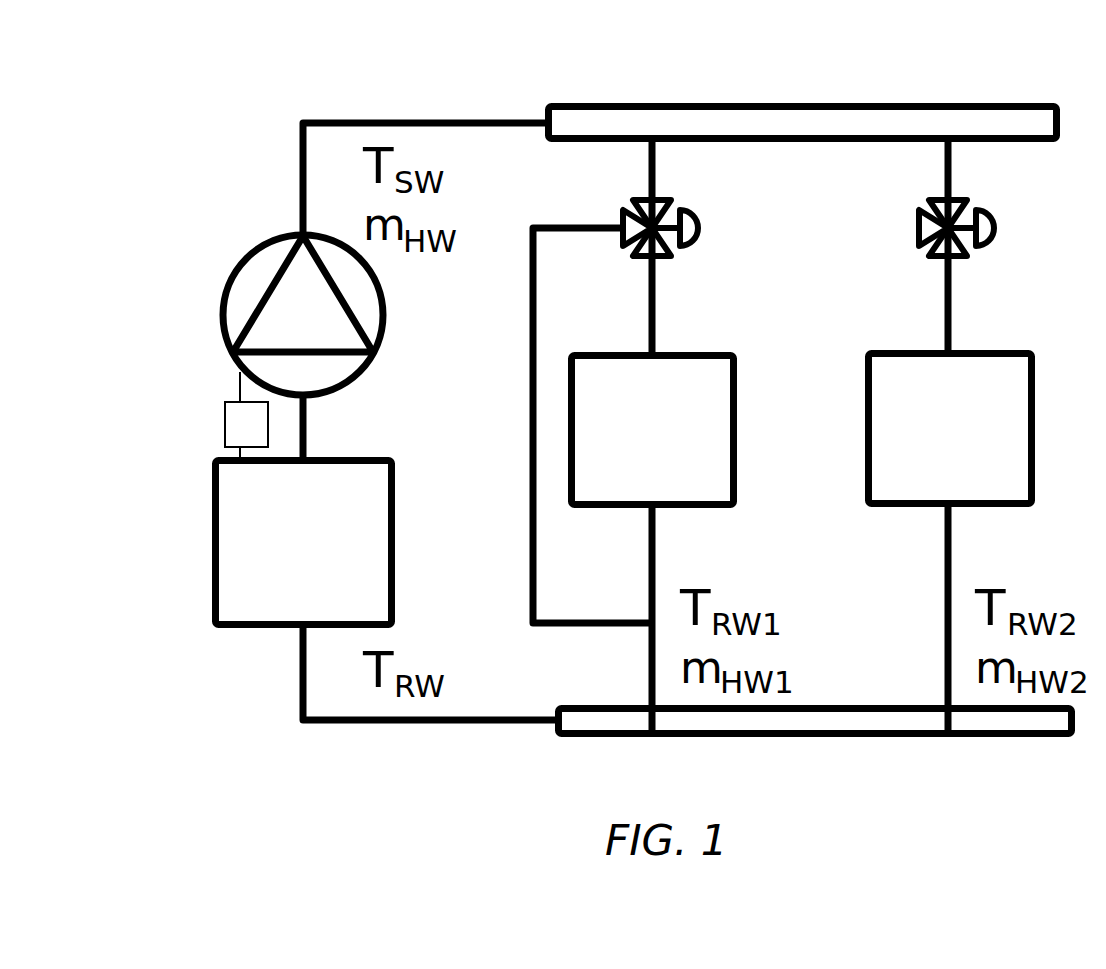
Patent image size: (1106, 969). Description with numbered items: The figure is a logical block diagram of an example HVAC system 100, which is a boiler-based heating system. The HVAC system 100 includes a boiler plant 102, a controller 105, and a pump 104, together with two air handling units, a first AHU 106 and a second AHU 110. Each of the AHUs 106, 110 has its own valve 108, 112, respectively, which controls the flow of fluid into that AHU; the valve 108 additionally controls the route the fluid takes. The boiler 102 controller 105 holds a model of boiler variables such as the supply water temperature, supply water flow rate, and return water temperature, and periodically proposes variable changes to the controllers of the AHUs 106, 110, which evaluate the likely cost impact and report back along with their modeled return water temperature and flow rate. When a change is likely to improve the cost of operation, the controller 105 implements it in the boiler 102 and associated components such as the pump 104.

The HVAC system 100 is at (590, 70).
The boiler plant 102 is at (212, 518).
The pump 104 is at (250, 245).
The controller 105 is at (235, 400).
The AHU 106 is at (686, 352).
The valve 108 is at (660, 200).
The AHU 110 is at (972, 350).
The valve 112 is at (958, 198).